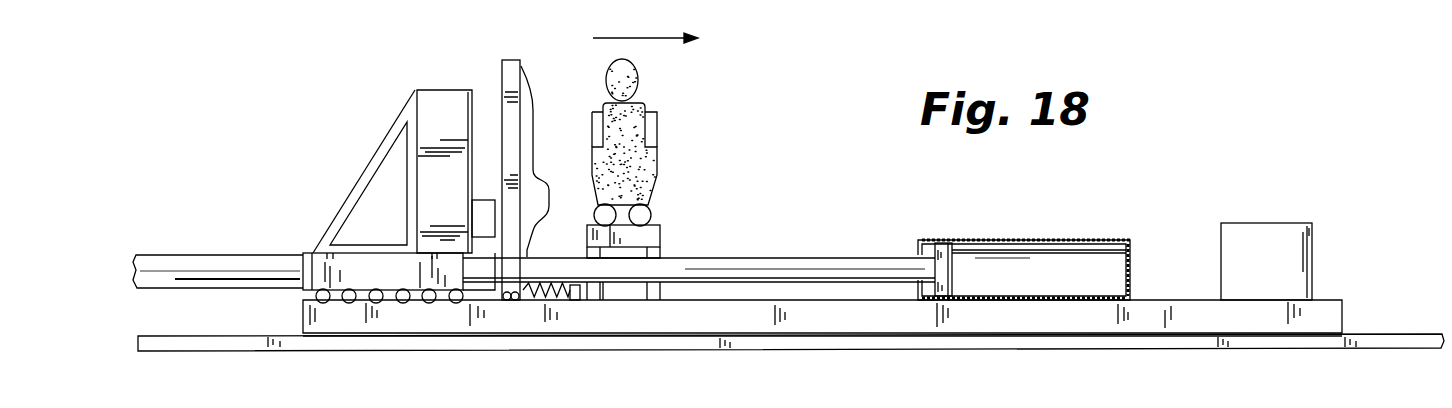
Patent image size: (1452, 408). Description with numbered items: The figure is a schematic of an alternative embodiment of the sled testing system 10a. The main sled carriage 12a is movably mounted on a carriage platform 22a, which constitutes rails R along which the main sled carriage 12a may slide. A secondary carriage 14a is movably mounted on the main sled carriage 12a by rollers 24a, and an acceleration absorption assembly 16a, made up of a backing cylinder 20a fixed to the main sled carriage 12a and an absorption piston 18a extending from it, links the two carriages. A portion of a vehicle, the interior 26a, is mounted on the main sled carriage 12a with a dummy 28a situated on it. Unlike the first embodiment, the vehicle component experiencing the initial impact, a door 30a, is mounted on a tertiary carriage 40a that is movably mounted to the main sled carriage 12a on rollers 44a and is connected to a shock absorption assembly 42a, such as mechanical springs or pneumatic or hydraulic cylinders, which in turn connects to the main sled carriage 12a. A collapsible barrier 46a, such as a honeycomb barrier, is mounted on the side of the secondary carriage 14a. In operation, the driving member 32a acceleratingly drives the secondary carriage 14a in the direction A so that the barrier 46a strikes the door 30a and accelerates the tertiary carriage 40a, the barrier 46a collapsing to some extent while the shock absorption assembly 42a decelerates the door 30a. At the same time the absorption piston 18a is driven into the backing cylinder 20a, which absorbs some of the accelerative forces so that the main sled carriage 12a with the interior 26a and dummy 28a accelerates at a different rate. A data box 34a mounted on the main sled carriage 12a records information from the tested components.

The sled testing system 10a is at (763, 165).
The main sled carriage 12a is at (1177, 305).
The secondary carriage 14a is at (371, 241).
The acceleration absorption assembly 16a is at (945, 233).
The absorption piston 18a is at (773, 257).
The backing cylinder 20a is at (1033, 260).
The carriage platform 22a is at (710, 343).
The rollers 24a is at (315, 292).
The interior 26a is at (665, 232).
The dummy 28a is at (627, 80).
The door 30a is at (528, 92).
The driving member 32a is at (228, 268).
The data box 34a is at (1265, 225).
The tertiary carriage 40a is at (512, 60).
The shock absorption assembly 42a is at (541, 303).
The rollers 44a is at (498, 303).
The barrier 46a is at (423, 100).
The direction A is at (645, 27).
The rails R is at (832, 343).